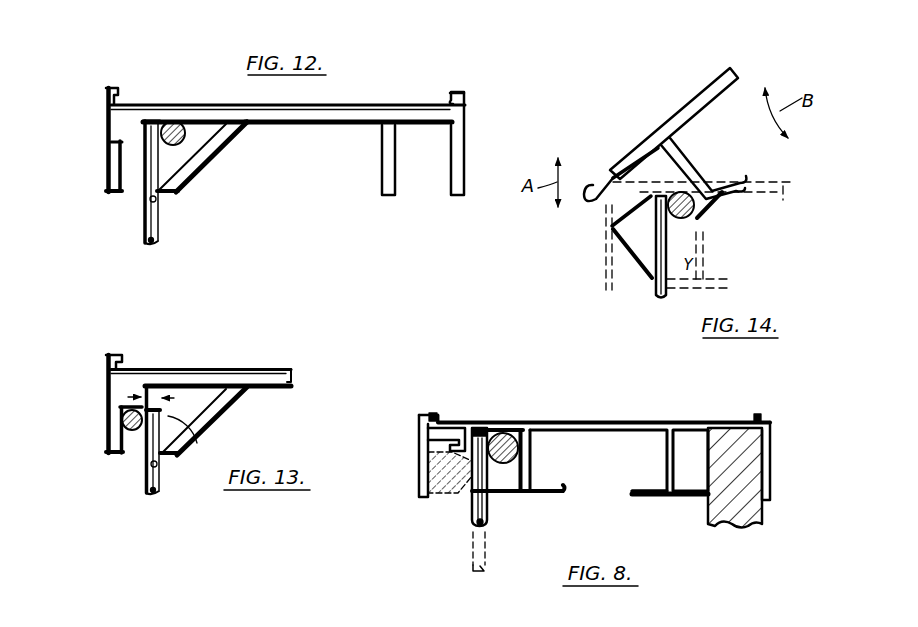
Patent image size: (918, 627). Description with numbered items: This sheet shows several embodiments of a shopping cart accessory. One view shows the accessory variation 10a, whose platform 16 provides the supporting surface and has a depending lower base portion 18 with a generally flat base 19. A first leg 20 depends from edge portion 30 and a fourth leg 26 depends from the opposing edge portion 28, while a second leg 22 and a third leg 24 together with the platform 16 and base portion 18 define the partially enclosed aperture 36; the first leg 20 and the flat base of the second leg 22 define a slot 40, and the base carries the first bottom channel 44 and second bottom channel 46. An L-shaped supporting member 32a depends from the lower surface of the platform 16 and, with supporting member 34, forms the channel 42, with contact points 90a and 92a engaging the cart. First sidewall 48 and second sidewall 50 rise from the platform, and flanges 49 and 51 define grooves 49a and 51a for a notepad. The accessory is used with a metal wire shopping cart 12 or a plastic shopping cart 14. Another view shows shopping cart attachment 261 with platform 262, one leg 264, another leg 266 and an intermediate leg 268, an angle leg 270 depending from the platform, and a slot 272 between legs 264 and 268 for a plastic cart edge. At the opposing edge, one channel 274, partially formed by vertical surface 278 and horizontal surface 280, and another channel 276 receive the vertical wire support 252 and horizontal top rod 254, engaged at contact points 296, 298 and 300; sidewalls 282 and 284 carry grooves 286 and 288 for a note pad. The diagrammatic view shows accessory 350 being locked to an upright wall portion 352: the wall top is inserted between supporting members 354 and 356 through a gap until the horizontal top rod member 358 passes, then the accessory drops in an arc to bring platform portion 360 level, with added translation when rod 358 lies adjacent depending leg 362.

In FIG. 12, the metal wire shopping cart 12 is at (280, 155).
In FIG. 13, the metal wire shopping cart 12 is at (183, 415).
In FIG. 12, the shopping cart attachment 261 is at (280, 154).
In FIG. 13, the shopping cart attachment 261 is at (183, 414).
In FIG. 12, the platform 262 is at (246, 104).
In FIG. 13, the platform 262 is at (277, 370).
In FIG. 12, the sidewall 284 is at (107, 87).
In FIG. 13, the sidewall 284 is at (107, 354).
In FIG. 12, the groove 288 is at (120, 97).
In FIG. 13, the groove 288 is at (124, 362).
In FIG. 12, the vertical surface 278 is at (148, 121).
In FIG. 13, the vertical surface 278 is at (150, 386).
In FIG. 12, the vertical wire support 252 is at (156, 243).
In FIG. 13, the vertical wire support 252 is at (152, 496).
In FIG. 8, the vertical wire support 252 is at (488, 528).
In FIG. 12, the horizontal top rod 254 is at (186, 143).
In FIG. 13, the horizontal top rod 254 is at (123, 427).
In FIG. 8, the horizontal top rod 254 is at (511, 434).
In FIG. 12, the angle leg 270 is at (233, 147).
In FIG. 13, the angle leg 270 is at (222, 413).
In FIG. 12, the leg 266 is at (106, 190).
In FIG. 13, the leg 266 is at (107, 455).
In FIG. 12, the horizontal surface 280 is at (119, 150).
In FIG. 13, the horizontal surface 280 is at (120, 402).
In FIG. 12, the contact point 298 is at (143, 124).
In FIG. 12, the contact point 296 is at (155, 202).
In FIG. 13, the contact point 296 is at (160, 470).
In FIG. 12, the channel 274 is at (120, 191).
In FIG. 13, the channel 274 is at (128, 455).
In FIG. 12, the channel 276 is at (270, 166).
In FIG. 13, the channel 276 is at (253, 400).
In FIG. 12, the intermediate leg 268 is at (384, 187).
In FIG. 12, the slot 272 is at (420, 183).
In FIG. 12, the leg 264 is at (465, 160).
In FIG. 12, the groove 286 is at (450, 97).
In FIG. 12, the sidewall 282 is at (466, 96).
In FIG. 13, the contact point 300 is at (120, 418).
In FIG. 14, the accessory 350 is at (677, 199).
In FIG. 14, the platform portion 360 is at (699, 102).
In FIG. 14, the generally upright wall portion or structure 352 is at (660, 296).
In FIG. 14, the supporting member 354 is at (700, 230).
In FIG. 14, the supporting member 356 is at (614, 222).
In FIG. 14, the horizontal top rod member 358 is at (717, 215).
In FIG. 14, the depending leg 362 is at (590, 206).
In FIG. 8, the shopping cart accessory 10a is at (591, 466).
In FIG. 8, the platform 16 is at (634, 421).
In FIG. 8, the fourth leg 26 is at (418, 487).
In FIG. 8, the second sidewall 50 is at (418, 415).
In FIG. 8, the flange 51 is at (433, 412).
In FIG. 8, the groove 51a is at (441, 420).
In FIG. 8, the opposing edge portion 28 is at (422, 432).
In FIG. 8, the L-shaped supporting member 32a is at (434, 446).
In FIG. 8, the opening or channel 42 is at (437, 458).
In FIG. 8, the contact point 92a is at (480, 428).
In FIG. 8, the contact point 90a is at (477, 497).
In FIG. 8, the third leg 24 is at (531, 466).
In FIG. 8, the second bottom channel 46 is at (523, 493).
In FIG. 8, the supporting member 34 is at (504, 494).
In FIG. 8, the partially enclosed aperture 36 is at (585, 446).
In FIG. 8, the flat base 19 is at (631, 489).
In FIG. 8, the second leg 22 is at (671, 455).
In FIG. 8, the slot 40 is at (692, 479).
In FIG. 8, the first bottom channel 44 is at (658, 500).
In FIG. 8, the plastic shopping cart 14 is at (745, 523).
In FIG. 8, the first leg 20 is at (770, 482).
In FIG. 8, the edge portion 30 is at (774, 432).
In FIG. 8, the first sidewall 48 is at (773, 424).
In FIG. 8, the flange 49 is at (764, 418).
In FIG. 8, the groove 49a is at (758, 413).
In FIG. 8, the base portion 18 is at (597, 508).